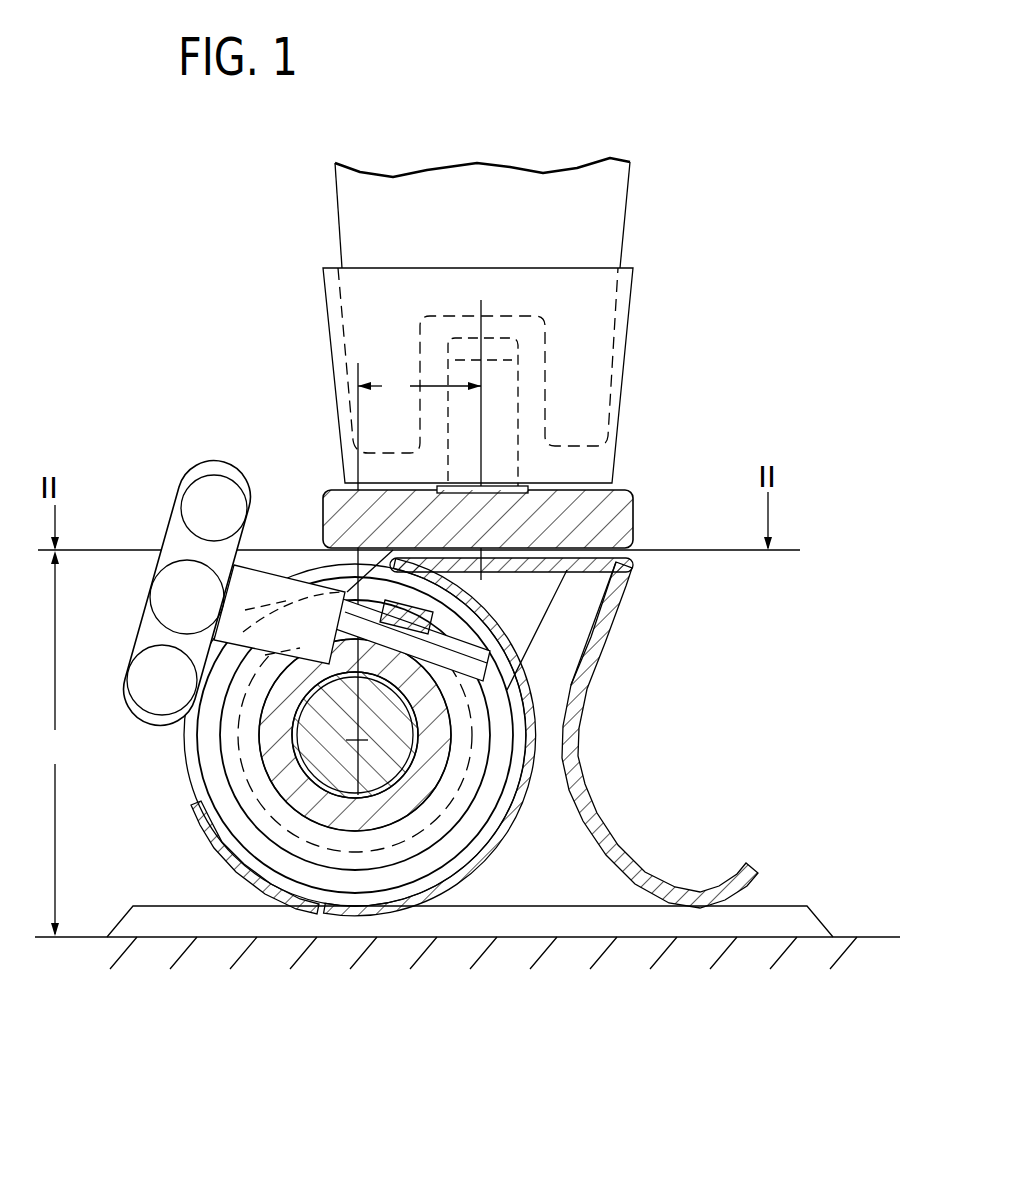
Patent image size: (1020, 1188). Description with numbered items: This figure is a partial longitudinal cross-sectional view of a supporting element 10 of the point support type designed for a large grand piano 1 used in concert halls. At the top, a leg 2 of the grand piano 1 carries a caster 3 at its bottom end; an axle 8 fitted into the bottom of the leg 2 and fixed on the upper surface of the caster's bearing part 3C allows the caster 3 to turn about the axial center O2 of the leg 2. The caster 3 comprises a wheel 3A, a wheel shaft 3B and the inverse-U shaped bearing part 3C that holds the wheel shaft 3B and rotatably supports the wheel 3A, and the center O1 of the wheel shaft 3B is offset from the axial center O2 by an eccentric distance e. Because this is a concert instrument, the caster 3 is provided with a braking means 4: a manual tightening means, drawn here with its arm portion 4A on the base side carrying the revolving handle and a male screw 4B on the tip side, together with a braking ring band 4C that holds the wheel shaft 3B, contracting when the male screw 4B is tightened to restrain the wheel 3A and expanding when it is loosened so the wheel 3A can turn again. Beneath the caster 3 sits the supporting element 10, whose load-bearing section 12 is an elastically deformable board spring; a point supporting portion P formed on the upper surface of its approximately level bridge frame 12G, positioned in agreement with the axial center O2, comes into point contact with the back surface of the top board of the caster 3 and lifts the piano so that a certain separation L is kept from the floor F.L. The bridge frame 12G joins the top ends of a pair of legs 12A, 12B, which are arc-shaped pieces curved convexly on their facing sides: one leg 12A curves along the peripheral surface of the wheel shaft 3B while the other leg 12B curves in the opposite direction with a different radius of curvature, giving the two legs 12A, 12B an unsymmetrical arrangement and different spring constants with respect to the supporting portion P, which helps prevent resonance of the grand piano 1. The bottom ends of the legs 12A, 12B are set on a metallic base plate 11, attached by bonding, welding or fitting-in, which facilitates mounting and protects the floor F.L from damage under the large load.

The grand piano 1 is at (514, 158).
The leg 2 is at (600, 212).
The caster 3 is at (527, 607).
The wheel 3A is at (307, 873).
The wheel shaft 3B is at (363, 805).
The bearing part 3C is at (612, 533).
The braking means 4 is at (174, 594).
The pedal arm 4A is at (258, 585).
The male screw 4B is at (493, 703).
The braking ring band 4C is at (270, 760).
The axle 8 is at (500, 407).
The supporting element 10 is at (772, 648).
The base plate 11 is at (795, 908).
The load-bearing section 12 is at (596, 789).
The leg 12A is at (215, 840).
The leg 12B is at (585, 675).
The bridge frame 12G is at (622, 603).
The center of the wheel shaft O1 is at (362, 740).
The axial center of the leg O2 is at (481, 313).
The point supporting portion P is at (615, 492).
The eccentric distance e is at (419, 386).
The separation L is at (54, 743).
The floor F.L is at (887, 935).